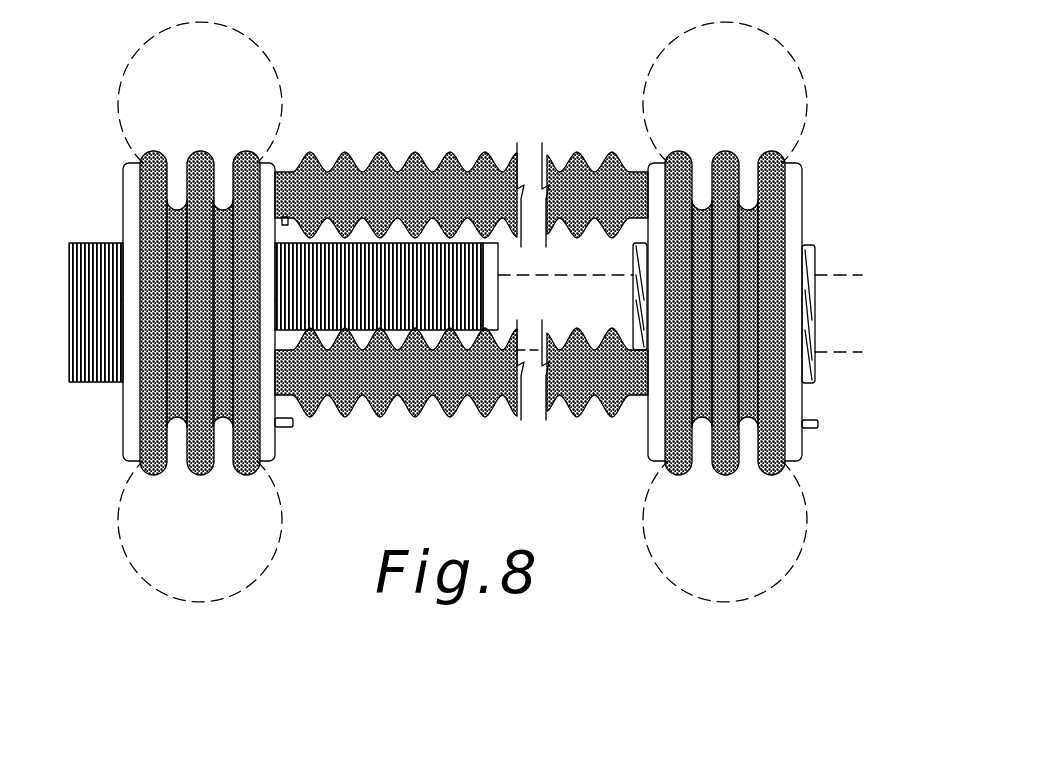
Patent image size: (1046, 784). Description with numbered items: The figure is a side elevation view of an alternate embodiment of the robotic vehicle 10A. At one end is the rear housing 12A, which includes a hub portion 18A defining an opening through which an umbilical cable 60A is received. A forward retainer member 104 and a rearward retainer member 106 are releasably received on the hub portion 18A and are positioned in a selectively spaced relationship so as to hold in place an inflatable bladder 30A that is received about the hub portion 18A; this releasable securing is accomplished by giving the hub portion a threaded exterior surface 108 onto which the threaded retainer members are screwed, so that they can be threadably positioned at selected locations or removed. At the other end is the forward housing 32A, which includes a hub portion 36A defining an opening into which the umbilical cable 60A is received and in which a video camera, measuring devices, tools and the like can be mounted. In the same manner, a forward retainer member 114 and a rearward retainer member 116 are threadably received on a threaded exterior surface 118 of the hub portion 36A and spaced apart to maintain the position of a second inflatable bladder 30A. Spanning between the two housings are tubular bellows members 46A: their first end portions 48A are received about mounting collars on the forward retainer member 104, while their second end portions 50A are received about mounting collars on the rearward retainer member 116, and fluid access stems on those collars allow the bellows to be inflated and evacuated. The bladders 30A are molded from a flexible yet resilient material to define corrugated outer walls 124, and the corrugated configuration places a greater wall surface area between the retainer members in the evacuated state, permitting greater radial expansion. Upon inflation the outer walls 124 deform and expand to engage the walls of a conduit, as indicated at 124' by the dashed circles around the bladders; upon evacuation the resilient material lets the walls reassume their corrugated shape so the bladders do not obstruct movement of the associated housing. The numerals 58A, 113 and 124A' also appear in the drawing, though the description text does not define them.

The robotic vehicle 10A is at (811, 34).
The rear housing 12A is at (802, 193).
The hub portion 18A is at (816, 313).
The inflatable bladder 30A is at (180, 151).
The forward housing 32A is at (124, 218).
The hub portion 36A is at (393, 245).
The tubular bellows member 46A is at (480, 152).
The first end portion 48A is at (640, 173).
The second end portion 50A is at (283, 160).
The retaining tab 58A is at (288, 221).
The umbilical cable 60A is at (523, 268).
The forward retainer member 104 is at (645, 432).
The rearward retainer member 106 is at (802, 180).
The threaded exterior surface 108 is at (636, 262).
The pin 113 is at (293, 423).
The forward retainer member 114 is at (122, 455).
The rearward retainer member 116 is at (277, 455).
The threaded exterior surface 118 is at (110, 385).
The corrugated outer wall 124 is at (468, 315).
The expanded outer wall 124' is at (509, 308).
The detail circle 124A' is at (249, 83).